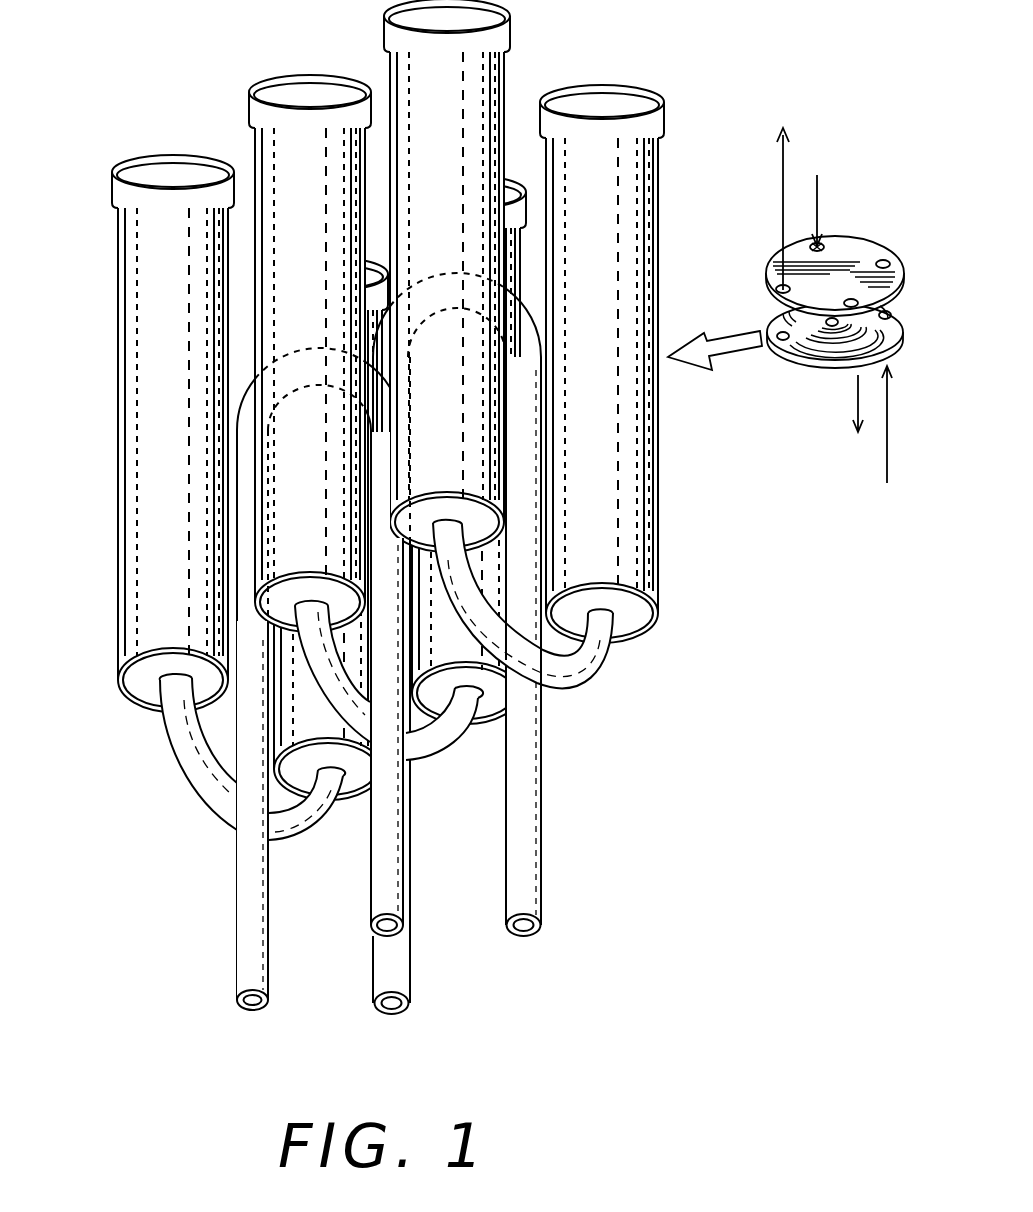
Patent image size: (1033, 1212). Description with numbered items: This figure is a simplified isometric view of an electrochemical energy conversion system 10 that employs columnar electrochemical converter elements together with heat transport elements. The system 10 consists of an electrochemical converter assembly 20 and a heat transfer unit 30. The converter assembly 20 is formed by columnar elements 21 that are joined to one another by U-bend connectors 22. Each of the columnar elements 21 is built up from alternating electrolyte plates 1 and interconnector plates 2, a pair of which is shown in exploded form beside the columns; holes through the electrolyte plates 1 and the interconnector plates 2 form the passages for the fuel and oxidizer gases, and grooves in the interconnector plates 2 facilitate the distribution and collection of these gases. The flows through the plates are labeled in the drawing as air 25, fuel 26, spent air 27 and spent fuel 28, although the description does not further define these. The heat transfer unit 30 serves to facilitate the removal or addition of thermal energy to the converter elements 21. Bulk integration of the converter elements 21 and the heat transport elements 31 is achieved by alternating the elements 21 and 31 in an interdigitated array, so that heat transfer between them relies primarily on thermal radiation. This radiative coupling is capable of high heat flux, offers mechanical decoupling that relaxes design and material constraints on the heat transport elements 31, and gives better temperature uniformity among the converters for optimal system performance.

The electrochemical energy conversion system 10 is at (380, 507).
The electrochemical converter assembly 20 is at (406, 400).
The columnar elements 21 is at (484, 63).
The U-bend connectors 22 is at (597, 662).
The heat transfer unit 30 is at (425, 873).
The heat transport elements 31 is at (378, 902).
The electrolyte plates 1 is at (897, 252).
The interconnector plates 2 is at (904, 316).
The air inlet 25 is at (818, 188).
The fuel inlet 26 is at (912, 436).
The spent air outlet 27 is at (848, 439).
The spent fuel outlet 28 is at (790, 145).